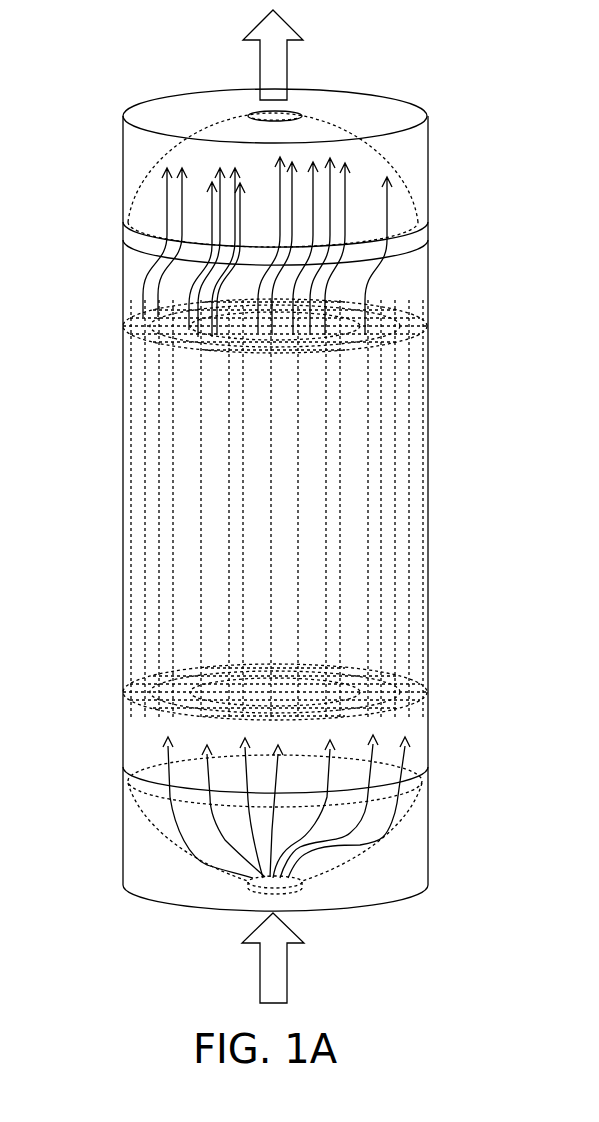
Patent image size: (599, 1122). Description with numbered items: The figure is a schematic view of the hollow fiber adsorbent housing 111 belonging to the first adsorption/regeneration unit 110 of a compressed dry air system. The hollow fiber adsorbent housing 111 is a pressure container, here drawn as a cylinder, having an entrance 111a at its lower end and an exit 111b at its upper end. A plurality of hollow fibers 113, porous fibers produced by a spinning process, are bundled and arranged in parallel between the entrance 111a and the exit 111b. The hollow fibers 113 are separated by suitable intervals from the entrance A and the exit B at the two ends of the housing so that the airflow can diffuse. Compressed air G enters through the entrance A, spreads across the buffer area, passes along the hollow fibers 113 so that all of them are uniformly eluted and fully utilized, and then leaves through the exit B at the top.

The first adsorption/regeneration unit 110 is at (107, 25).
The hollow fiber adsorbent housing 111 is at (123, 560).
The entrance 111a is at (347, 890).
The exit 111b is at (357, 107).
The hollow fibers 113 is at (395, 550).
The entrance A is at (250, 887).
The exit B is at (290, 112).
The compressed air G is at (274, 958).